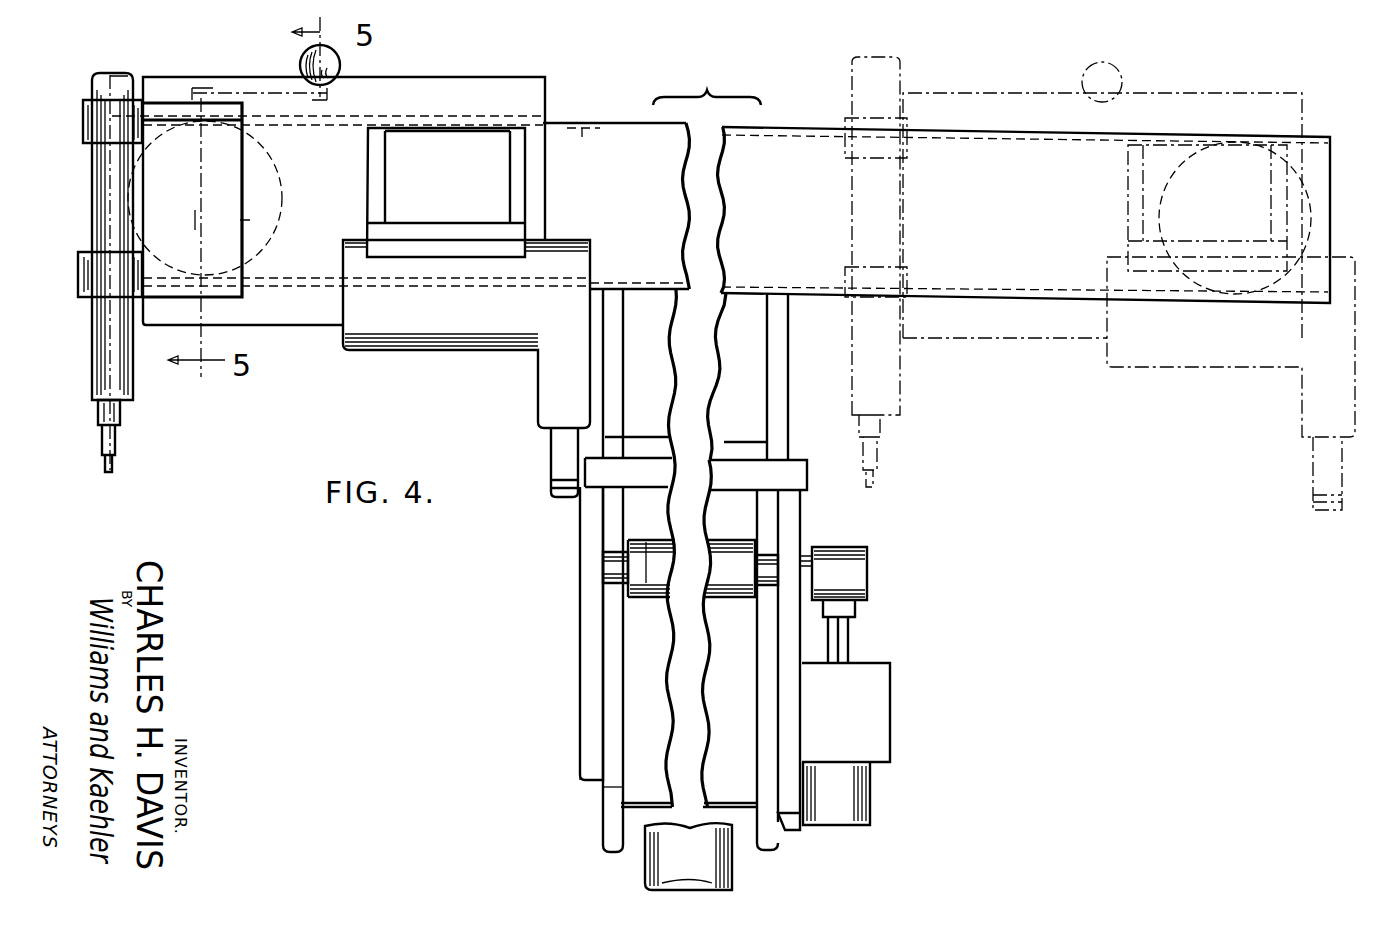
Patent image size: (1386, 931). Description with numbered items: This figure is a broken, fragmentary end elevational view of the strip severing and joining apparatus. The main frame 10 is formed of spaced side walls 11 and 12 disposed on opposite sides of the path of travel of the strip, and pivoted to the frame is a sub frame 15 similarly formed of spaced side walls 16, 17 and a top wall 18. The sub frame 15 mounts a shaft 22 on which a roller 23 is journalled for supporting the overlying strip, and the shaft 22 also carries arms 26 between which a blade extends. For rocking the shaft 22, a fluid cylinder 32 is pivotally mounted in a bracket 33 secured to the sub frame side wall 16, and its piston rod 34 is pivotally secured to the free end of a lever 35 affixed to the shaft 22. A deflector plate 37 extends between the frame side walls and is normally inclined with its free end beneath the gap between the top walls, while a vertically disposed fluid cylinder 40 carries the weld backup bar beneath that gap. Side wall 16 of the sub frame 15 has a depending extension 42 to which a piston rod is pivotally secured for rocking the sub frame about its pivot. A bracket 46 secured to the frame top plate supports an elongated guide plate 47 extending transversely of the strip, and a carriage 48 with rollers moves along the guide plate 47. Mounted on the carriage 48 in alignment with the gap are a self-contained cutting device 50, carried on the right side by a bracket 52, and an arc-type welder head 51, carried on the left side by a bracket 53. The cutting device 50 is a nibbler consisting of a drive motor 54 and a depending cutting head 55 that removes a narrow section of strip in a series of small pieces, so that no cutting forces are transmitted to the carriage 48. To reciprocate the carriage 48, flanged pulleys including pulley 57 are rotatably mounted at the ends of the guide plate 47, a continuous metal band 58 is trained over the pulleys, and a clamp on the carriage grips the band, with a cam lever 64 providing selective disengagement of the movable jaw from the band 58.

The frame 10 is at (626, 675).
The side wall 11 is at (760, 715).
The side wall 12 is at (613, 737).
The sub frame 15 is at (578, 535).
The side wall 16 is at (793, 518).
The side wall 17 is at (580, 672).
The top wall 18 is at (627, 470).
The shaft 22 is at (615, 570).
The roller 23 is at (723, 552).
The arms 26 is at (633, 545).
The fluid cylinder 32 is at (850, 790).
The bracket 33 is at (880, 698).
The piston rod 34 is at (838, 633).
The lever 35 is at (855, 562).
The deflector plate 37 is at (633, 787).
The fluid cylinder 40 is at (662, 862).
The depending extension 42 is at (790, 816).
The bracket 46 is at (757, 393).
The guide plate 47 is at (618, 205).
The carriage 48 is at (462, 104).
The cutting device 50 is at (501, 355).
The welder head 51 is at (90, 178).
The bracket 52 is at (466, 193).
The bracket 53 is at (240, 220).
The drive motor 54 is at (423, 332).
The cutting head 55 is at (551, 448).
The flanged pulley 57 is at (294, 189).
The continuous metal band 58 is at (604, 124).
The cam lever 64 is at (338, 58).